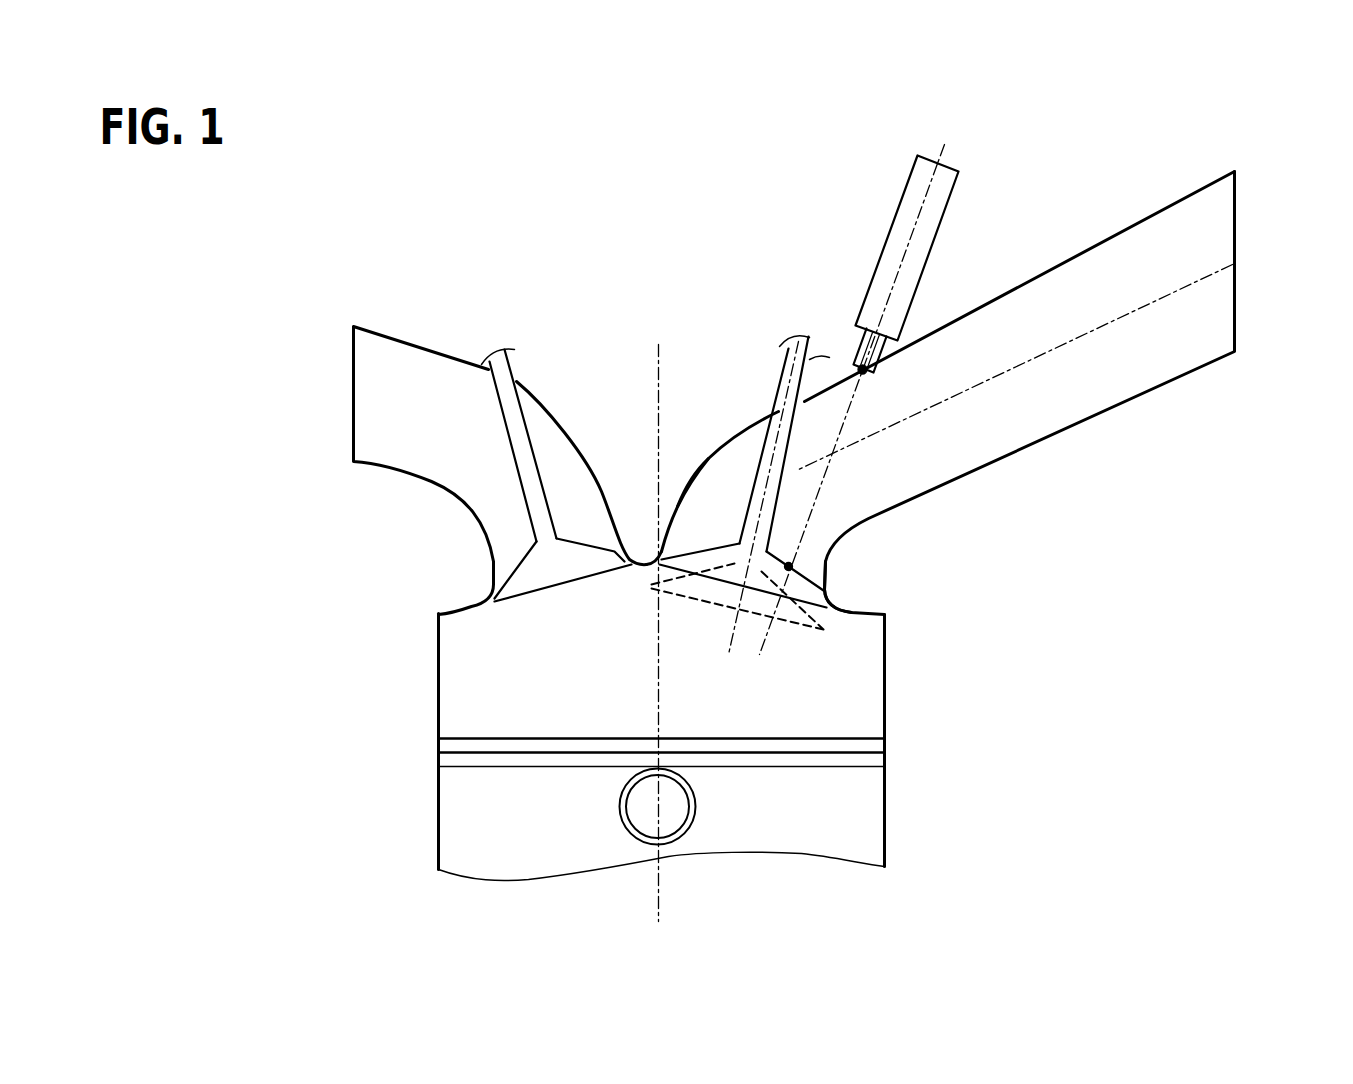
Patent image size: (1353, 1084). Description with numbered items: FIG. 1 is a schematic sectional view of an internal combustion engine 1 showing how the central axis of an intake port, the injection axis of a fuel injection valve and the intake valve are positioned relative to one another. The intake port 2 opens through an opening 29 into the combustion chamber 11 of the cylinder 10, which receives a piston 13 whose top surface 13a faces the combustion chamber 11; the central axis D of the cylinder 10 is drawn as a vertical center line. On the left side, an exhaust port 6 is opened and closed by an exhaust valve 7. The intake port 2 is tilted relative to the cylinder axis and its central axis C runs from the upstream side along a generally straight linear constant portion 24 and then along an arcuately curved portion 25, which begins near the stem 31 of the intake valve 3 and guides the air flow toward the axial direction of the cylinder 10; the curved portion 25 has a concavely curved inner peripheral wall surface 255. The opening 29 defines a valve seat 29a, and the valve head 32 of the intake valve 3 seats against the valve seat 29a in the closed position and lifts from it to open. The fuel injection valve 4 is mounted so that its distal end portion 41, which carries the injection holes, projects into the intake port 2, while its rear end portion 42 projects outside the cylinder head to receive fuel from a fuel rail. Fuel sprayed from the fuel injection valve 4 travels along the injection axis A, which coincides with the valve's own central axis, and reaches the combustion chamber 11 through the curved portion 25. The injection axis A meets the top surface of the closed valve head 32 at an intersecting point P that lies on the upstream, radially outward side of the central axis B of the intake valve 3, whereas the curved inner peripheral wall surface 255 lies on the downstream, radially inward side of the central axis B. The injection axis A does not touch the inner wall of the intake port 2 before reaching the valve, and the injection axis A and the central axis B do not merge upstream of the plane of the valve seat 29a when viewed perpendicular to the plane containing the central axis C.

The internal combustion engine 1 is at (415, 257).
The intake port 2 is at (1093, 406).
The intake valve 3 is at (826, 584).
The fuel injection valve 4 is at (920, 183).
The exhaust port 6 is at (447, 490).
The exhaust valve 7 is at (535, 577).
The cylinder 10 is at (890, 718).
The combustion chamber 11 is at (488, 692).
The piston 13 is at (823, 822).
The top surface 13a is at (477, 733).
The linear constant portion 24 is at (1136, 218).
The curved portion 25 is at (729, 432).
The curved inner peripheral wall surface 255 is at (697, 468).
The opening 29 is at (782, 614).
The valve seat 29a is at (668, 550).
The stem 31 is at (786, 388).
The valve head 32 is at (838, 615).
The distal end portion 41 is at (863, 372).
The rear end portion 42 is at (940, 163).
The intersecting point P is at (792, 564).
The injection axis A is at (757, 638).
The central axis of the intake valve B is at (724, 646).
The central axis of the intake port C is at (1197, 280).
The central axis of the cylinder D is at (657, 900).